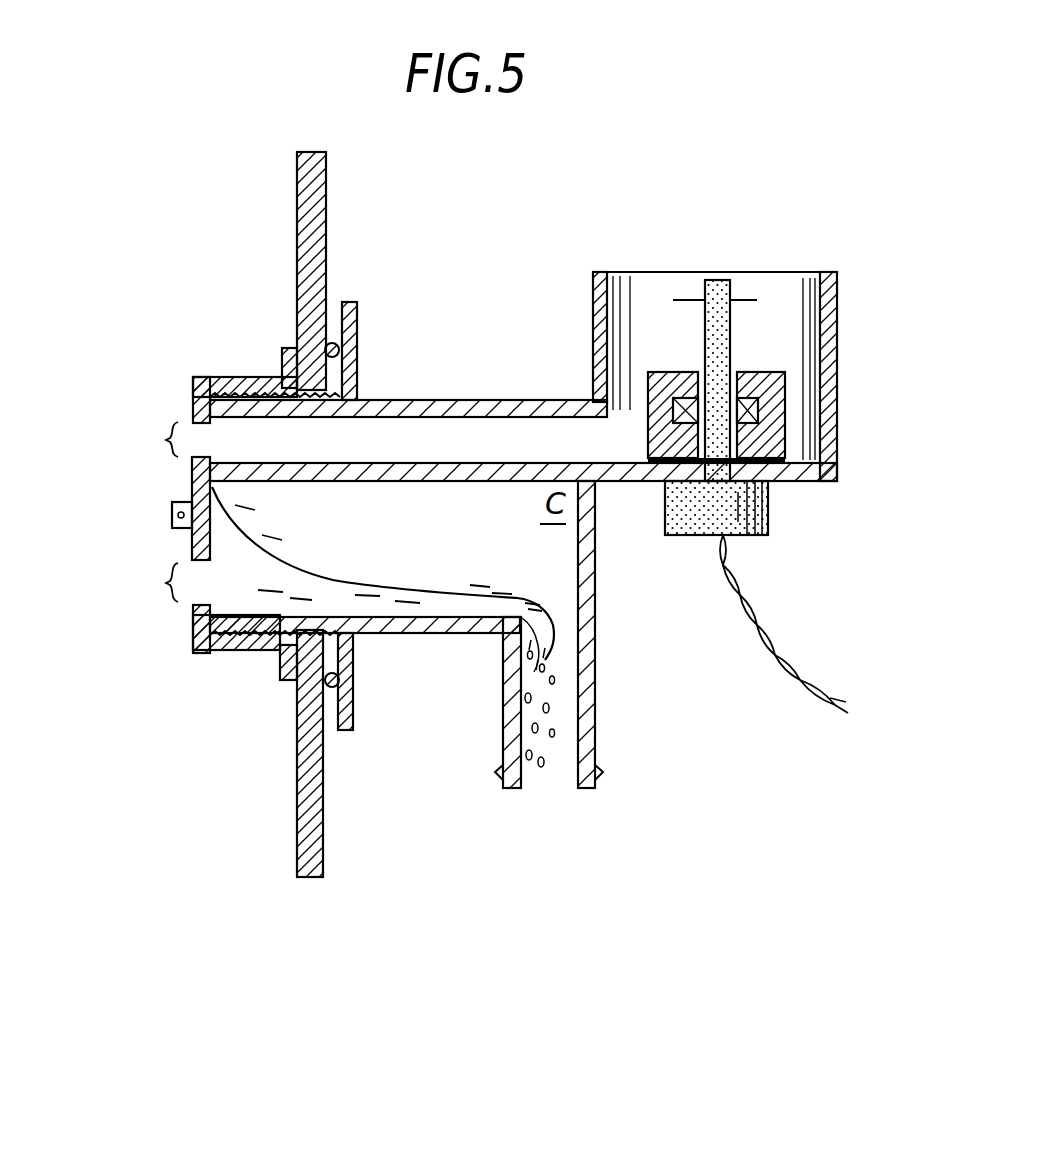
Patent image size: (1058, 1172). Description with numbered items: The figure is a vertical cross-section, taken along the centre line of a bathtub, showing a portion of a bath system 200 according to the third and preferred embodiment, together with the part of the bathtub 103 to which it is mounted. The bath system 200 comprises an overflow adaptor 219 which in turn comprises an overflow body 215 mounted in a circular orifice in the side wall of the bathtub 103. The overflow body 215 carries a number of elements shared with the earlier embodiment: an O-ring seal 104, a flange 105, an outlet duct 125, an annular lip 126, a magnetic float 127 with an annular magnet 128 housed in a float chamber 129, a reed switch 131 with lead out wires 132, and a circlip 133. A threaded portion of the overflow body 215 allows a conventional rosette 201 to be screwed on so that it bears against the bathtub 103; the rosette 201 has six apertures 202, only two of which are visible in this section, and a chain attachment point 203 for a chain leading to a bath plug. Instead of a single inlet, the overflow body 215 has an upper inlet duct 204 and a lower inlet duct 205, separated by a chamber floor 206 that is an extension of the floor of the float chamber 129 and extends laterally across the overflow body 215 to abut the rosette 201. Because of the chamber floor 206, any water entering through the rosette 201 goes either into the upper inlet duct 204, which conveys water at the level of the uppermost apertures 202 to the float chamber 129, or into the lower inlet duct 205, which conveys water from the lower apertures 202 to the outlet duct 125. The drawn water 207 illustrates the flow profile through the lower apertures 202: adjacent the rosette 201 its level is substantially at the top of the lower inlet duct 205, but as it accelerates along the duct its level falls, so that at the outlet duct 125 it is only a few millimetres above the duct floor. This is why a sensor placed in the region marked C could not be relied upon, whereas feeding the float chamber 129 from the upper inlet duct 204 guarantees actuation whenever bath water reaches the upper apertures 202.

The bathtub 103 is at (297, 790).
The O-ring seal 104 is at (295, 733).
The flange 105 is at (357, 328).
The outlet duct 125 is at (607, 827).
The annular lip 126 is at (590, 772).
The magnetic float 127 is at (787, 387).
The annular magnet 128 is at (757, 412).
The float chamber 129 is at (820, 245).
The reed switch 131 is at (768, 515).
The lead out wires 132 is at (797, 665).
The circlip 133 is at (757, 305).
The bath system 200 is at (672, 872).
The rosette 201 is at (197, 650).
The apertures 202 is at (166, 440).
The chain attachment point 203 is at (172, 525).
The upper inlet duct 204 is at (212, 437).
The lower inlet duct 205 is at (226, 605).
The chamber floor 206 is at (367, 482).
The water 207 is at (390, 580).
The overflow body 215 is at (600, 607).
The overflow adaptor 219 is at (766, 740).